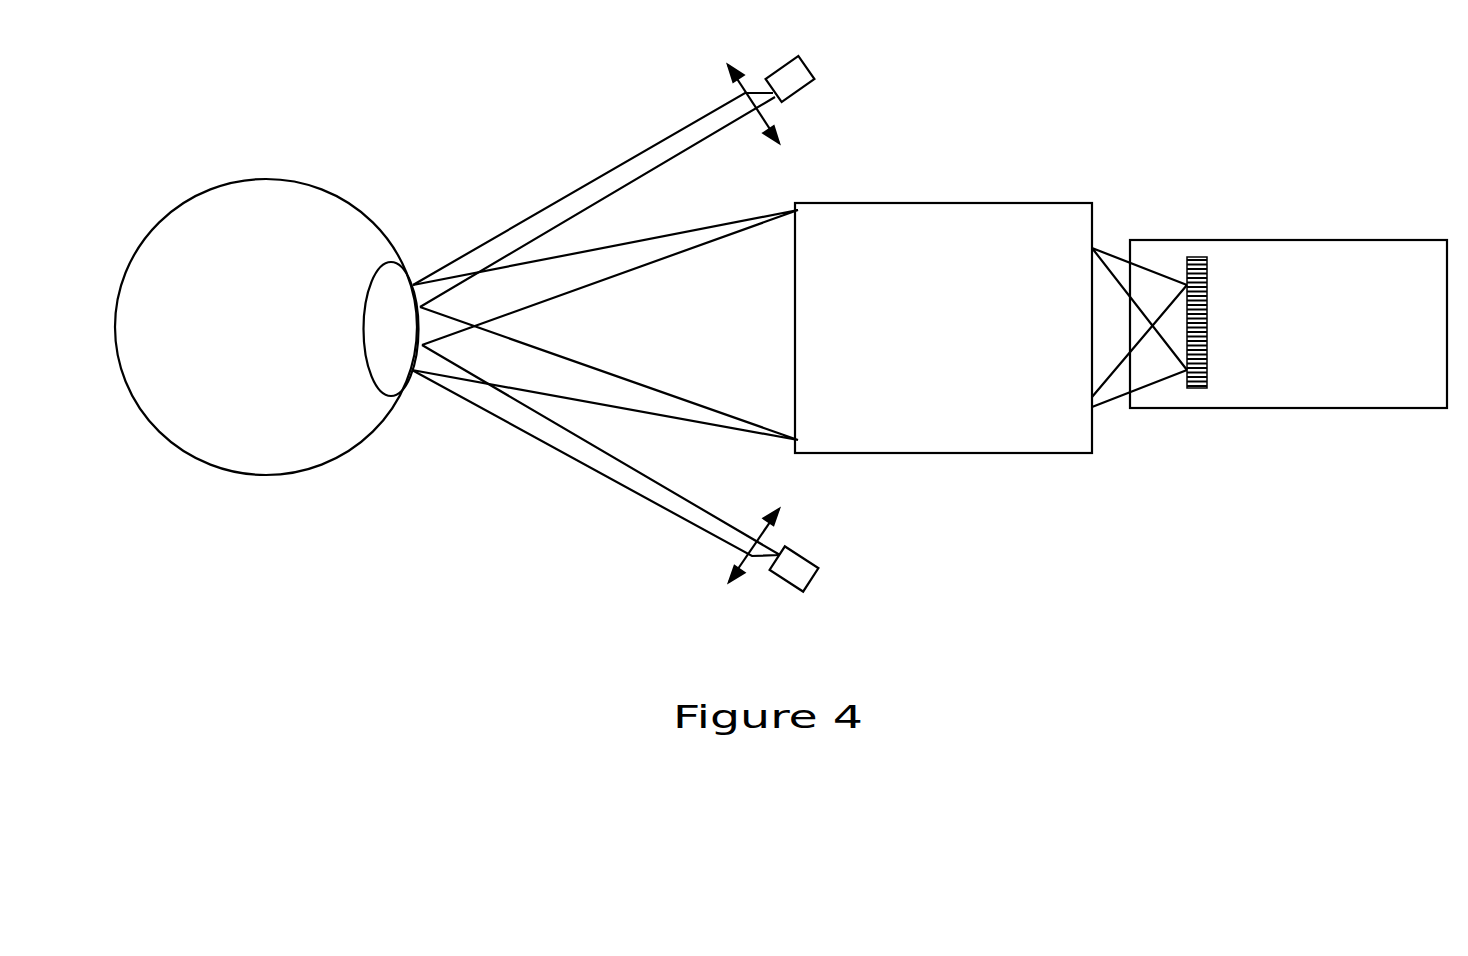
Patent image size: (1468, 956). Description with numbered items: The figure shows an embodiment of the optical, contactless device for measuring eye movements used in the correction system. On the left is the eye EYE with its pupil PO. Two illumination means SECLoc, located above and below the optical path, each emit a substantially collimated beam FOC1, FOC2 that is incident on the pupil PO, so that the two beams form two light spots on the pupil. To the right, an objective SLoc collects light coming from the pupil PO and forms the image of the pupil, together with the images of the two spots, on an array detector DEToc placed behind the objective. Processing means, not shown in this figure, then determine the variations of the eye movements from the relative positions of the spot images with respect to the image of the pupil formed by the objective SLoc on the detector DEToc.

The eye EYE is at (212, 248).
The pupil PO is at (382, 383).
The collimated beam FOC1 is at (571, 193).
The collimated beam FOC2 is at (570, 457).
The illumination means SECLoc is at (810, 63).
The objective SLoc is at (957, 264).
The array detector DEToc is at (1207, 285).